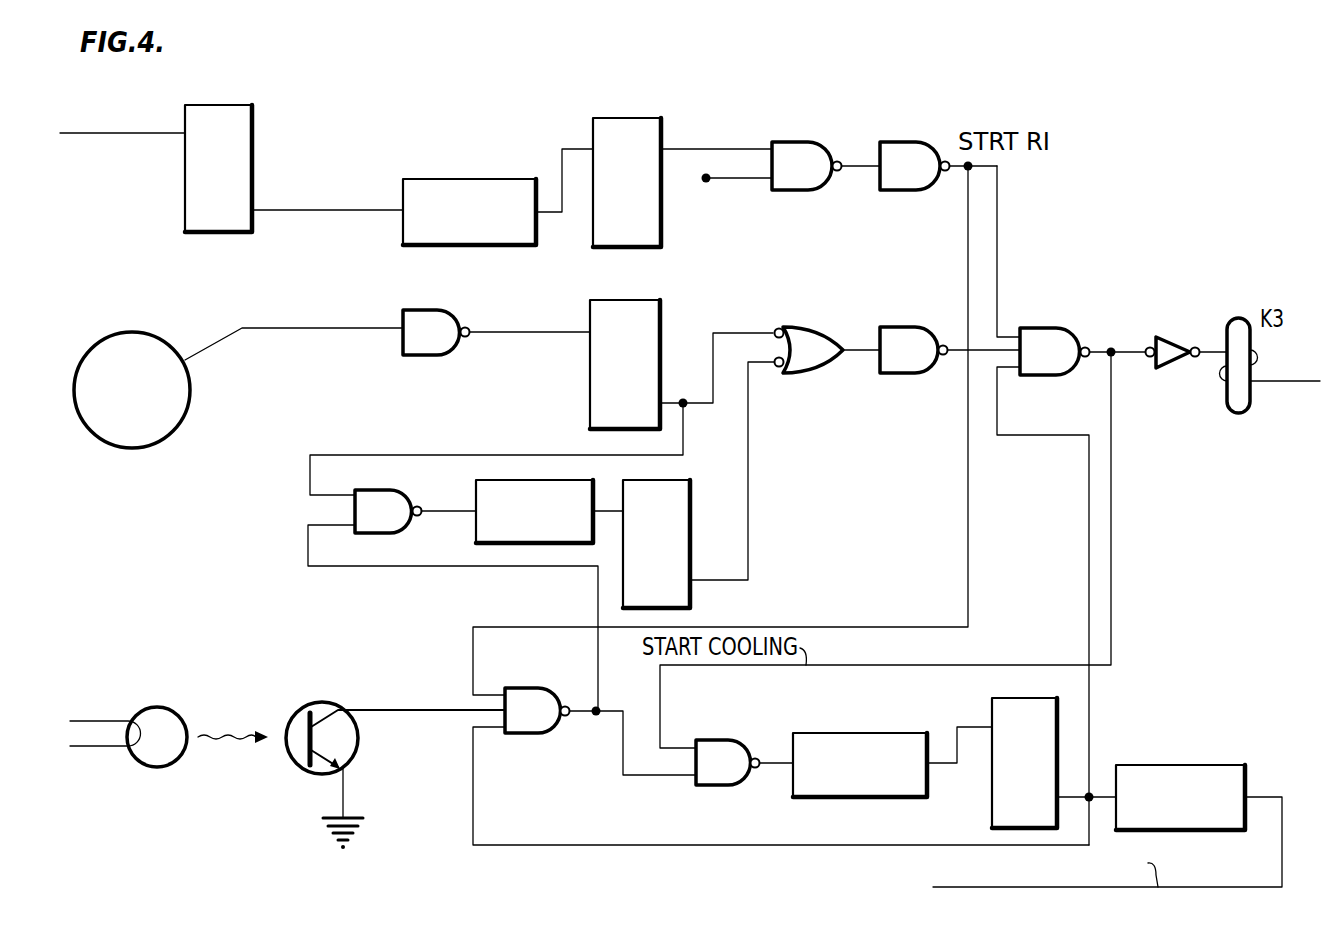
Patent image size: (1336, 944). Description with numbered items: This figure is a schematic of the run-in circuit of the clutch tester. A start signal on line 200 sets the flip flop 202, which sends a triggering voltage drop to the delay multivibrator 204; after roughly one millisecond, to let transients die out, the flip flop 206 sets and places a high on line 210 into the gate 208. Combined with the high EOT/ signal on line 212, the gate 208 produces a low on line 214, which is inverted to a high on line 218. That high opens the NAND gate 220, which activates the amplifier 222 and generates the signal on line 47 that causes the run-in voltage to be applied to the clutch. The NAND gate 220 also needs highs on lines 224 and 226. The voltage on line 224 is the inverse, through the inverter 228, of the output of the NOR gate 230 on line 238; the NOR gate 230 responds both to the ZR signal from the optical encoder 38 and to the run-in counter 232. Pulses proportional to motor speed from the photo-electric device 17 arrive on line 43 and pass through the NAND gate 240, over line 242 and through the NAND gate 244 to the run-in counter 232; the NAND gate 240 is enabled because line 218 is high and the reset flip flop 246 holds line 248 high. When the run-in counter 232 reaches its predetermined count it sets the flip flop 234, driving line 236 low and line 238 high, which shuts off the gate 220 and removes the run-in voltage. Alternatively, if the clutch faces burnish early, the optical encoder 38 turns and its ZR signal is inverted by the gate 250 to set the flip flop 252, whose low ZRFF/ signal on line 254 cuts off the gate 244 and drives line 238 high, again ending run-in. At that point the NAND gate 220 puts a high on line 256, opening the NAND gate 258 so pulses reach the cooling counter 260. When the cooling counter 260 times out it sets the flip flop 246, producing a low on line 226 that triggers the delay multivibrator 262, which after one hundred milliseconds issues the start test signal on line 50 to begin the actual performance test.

The start signal line 200 is at (144, 136).
The flip flop 202 is at (252, 160).
The delay multivibrator 204 is at (455, 179).
The flip flop 206 is at (661, 135).
The gate 208 is at (808, 142).
The line 210 is at (712, 149).
The line 212 is at (740, 180).
The line 214 is at (858, 168).
The line 218 is at (948, 171).
The NAND gate 220 is at (1067, 300).
The amplifier 222 is at (1152, 337).
The line 47 is at (1211, 350).
The line 224 is at (952, 357).
The line 226 is at (1005, 400).
The inverter 228 is at (916, 295).
The NOR gate 230 is at (807, 327).
The run-in counter 232 is at (476, 489).
The flip flop 234 is at (690, 512).
The line 236 is at (749, 443).
The line 238 is at (862, 353).
The NAND gate 240 is at (528, 688).
The line 242 is at (472, 568).
The NAND gate 244 is at (392, 535).
The flip flop 246 is at (1008, 698).
The line 248 is at (474, 800).
The gate 250 is at (430, 310).
The flip flop 252 is at (590, 299).
The line 254 is at (537, 455).
The line 256 is at (1111, 560).
The NAND gate 258 is at (714, 740).
The cooling counter 260 is at (830, 733).
The delay multivibrator 262 is at (1180, 777).
The optical encoder 38 is at (162, 437).
The photo-electric device 17 is at (189, 708).
The line 43 is at (371, 710).
The line 50 is at (1282, 853).